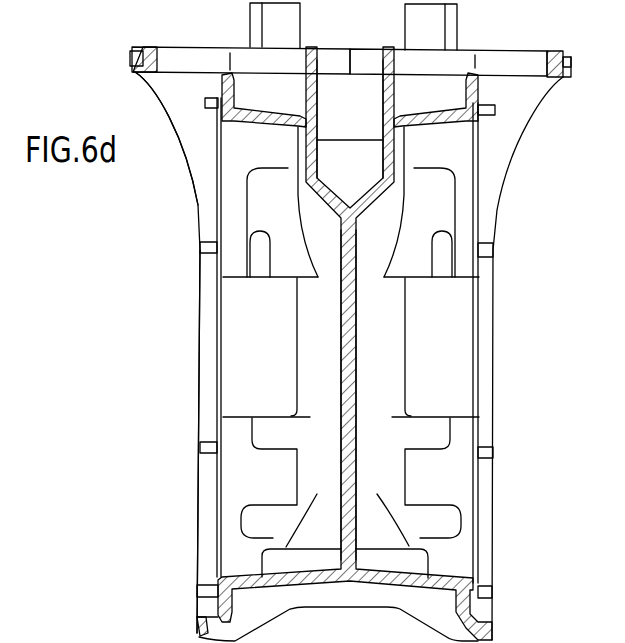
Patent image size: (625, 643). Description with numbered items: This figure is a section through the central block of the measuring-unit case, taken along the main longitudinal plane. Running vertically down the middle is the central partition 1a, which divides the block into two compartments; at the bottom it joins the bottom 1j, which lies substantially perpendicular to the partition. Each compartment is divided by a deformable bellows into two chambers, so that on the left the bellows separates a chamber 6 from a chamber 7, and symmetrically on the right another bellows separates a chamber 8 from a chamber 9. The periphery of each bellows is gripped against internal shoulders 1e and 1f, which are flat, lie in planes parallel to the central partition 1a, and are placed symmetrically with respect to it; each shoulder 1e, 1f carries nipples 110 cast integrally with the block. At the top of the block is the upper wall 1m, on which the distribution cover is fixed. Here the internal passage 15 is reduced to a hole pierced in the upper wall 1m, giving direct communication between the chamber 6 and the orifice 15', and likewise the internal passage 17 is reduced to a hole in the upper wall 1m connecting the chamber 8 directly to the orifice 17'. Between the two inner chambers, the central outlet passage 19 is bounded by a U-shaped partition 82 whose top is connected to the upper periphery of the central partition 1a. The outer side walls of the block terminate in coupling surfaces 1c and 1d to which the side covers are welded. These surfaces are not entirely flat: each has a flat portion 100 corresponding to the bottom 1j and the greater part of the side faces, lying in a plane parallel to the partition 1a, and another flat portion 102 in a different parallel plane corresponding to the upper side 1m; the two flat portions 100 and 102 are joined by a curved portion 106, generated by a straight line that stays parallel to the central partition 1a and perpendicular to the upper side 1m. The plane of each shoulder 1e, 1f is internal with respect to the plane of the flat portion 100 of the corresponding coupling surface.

The central partition 1a is at (348, 333).
The coupling surface 1c is at (200, 337).
The coupling surface 1d is at (493, 342).
The shoulder 1e is at (206, 103).
The shoulder 1f is at (484, 97).
The bottom 1j is at (318, 580).
The upper wall 1m is at (549, 54).
The chamber 6 is at (208, 162).
The chamber 7 is at (257, 162).
The chamber 8 is at (501, 168).
The chamber 9 is at (449, 168).
The internal passage 15 is at (235, 79).
The orifice 15' is at (239, 27).
The internal passage 17 is at (466, 87).
The orifice 17' is at (457, 33).
The central outlet passage 19 is at (358, 135).
The U-shaped partition 82 is at (382, 133).
The flat portion 100 is at (200, 496).
The flat portion 102 is at (131, 60).
The curved portion 106 is at (187, 153).
The nipple 110 is at (205, 247).